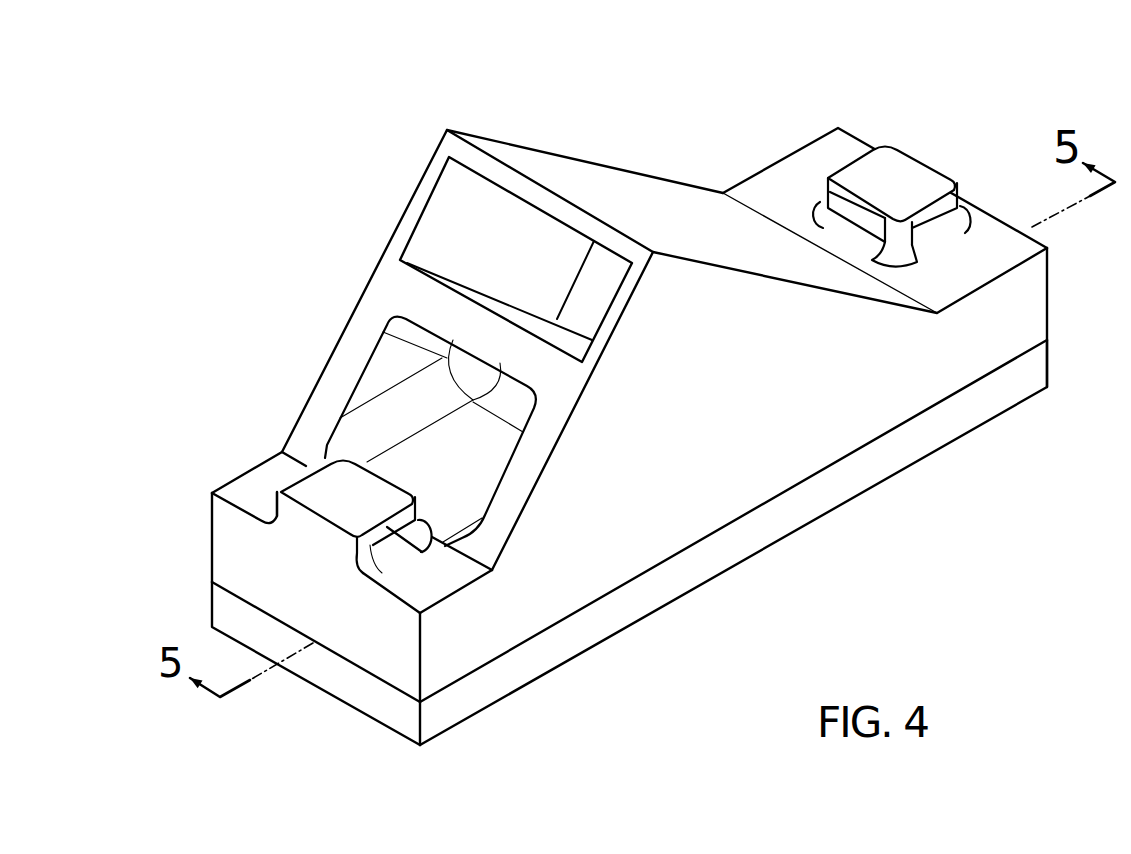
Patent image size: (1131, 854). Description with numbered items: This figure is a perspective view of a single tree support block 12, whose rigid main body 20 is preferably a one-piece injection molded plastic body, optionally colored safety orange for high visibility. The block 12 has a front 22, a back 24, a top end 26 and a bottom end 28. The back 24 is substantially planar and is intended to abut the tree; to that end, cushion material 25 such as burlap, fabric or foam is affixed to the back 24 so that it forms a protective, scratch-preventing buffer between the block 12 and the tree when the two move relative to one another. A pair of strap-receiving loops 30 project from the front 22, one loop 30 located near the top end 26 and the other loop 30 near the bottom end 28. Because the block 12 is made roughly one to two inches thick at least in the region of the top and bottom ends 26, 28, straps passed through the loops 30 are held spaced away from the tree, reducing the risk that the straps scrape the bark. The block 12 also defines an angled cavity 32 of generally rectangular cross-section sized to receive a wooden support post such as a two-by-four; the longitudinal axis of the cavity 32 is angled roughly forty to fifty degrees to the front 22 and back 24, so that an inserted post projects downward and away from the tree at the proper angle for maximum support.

The support block 12 is at (358, 325).
The rigid main body 20 is at (735, 430).
The front 22 is at (627, 182).
The back 24 is at (380, 683).
The cushion material 25 is at (782, 523).
The top end 26 is at (860, 135).
The bottom end 28 is at (228, 555).
The strap-receiving loop 30 is at (300, 487).
The angled cavity 32 is at (438, 205).